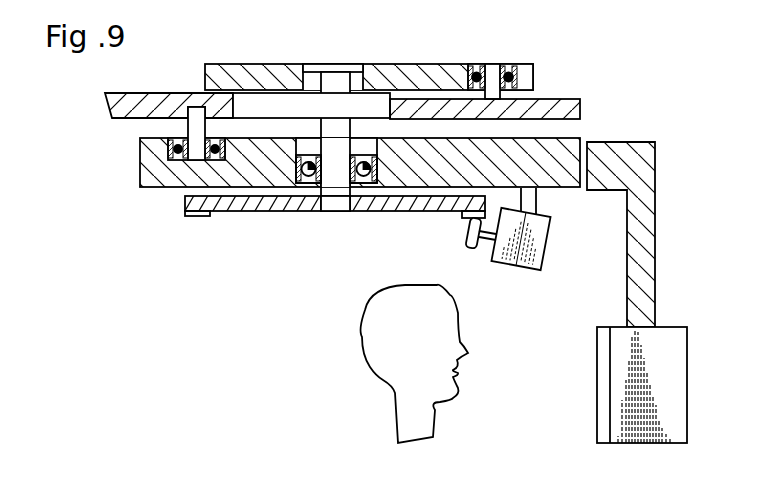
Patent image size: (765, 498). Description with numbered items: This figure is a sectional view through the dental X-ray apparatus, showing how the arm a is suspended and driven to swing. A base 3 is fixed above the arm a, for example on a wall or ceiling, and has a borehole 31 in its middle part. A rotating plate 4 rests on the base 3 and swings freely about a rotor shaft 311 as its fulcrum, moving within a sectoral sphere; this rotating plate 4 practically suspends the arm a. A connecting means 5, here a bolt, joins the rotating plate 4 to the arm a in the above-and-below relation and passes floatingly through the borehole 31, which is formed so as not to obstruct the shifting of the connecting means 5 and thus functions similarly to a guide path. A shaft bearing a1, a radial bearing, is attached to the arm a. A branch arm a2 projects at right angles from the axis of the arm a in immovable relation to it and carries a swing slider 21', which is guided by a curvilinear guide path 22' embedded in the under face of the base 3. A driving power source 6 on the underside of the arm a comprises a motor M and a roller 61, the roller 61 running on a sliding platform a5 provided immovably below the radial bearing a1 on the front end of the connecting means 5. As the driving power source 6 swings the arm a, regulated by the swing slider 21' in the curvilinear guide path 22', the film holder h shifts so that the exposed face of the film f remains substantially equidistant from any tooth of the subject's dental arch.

The rotating plate 4 is at (413, 68).
The connecting means 5 is at (340, 62).
The rotor shaft 311 is at (491, 70).
The curvilinear guide path 22' is at (169, 86).
The borehole 31 is at (258, 103).
The base 3 is at (568, 98).
The branch arm a2 is at (146, 160).
The swing slider 21' is at (148, 135).
The shaft bearing a1 is at (313, 188).
The sliding platform a5 is at (270, 206).
The arm a is at (572, 145).
The motor M is at (536, 248).
The driving power source 6 is at (525, 275).
The roller 61 is at (474, 249).
The X-ray film holder h is at (676, 335).
The film f is at (597, 422).